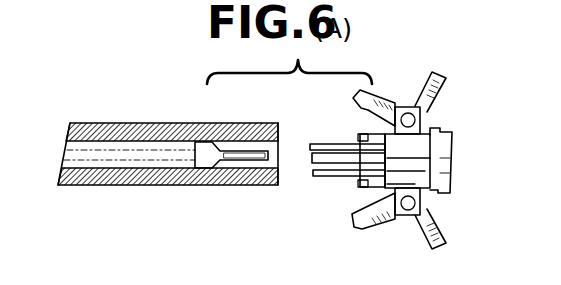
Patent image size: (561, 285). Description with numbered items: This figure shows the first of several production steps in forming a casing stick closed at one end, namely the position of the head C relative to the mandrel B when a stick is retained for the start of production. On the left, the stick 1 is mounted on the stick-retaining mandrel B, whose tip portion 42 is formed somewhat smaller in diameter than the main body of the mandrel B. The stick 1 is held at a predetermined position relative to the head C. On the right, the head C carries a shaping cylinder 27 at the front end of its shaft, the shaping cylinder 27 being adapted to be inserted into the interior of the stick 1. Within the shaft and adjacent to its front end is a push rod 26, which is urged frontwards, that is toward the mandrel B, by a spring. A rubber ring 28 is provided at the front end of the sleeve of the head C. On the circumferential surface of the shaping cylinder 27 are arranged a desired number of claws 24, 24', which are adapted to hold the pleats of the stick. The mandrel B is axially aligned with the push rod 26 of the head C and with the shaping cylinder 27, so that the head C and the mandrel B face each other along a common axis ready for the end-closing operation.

The stick 1 is at (129, 122).
The tip portion 42 is at (234, 152).
The shaping cylinder 27 is at (318, 143).
The push rod 26 is at (311, 175).
The rubber ring 28 is at (360, 135).
The claw 24 is at (399, 96).
The claw 24' is at (399, 222).
The mandrel B is at (152, 134).
The head C is at (389, 158).